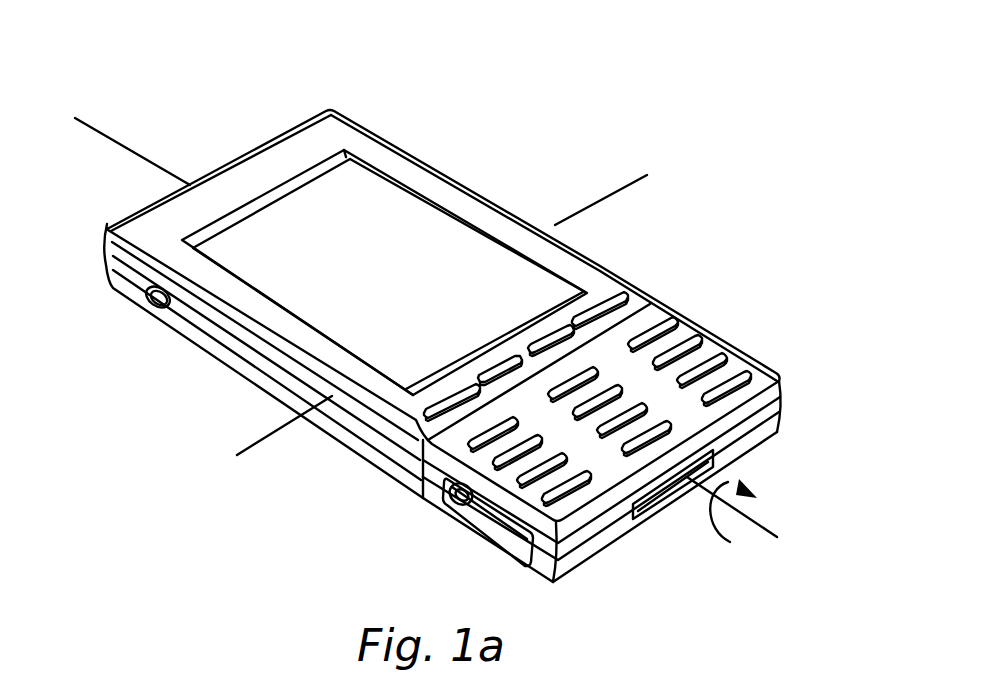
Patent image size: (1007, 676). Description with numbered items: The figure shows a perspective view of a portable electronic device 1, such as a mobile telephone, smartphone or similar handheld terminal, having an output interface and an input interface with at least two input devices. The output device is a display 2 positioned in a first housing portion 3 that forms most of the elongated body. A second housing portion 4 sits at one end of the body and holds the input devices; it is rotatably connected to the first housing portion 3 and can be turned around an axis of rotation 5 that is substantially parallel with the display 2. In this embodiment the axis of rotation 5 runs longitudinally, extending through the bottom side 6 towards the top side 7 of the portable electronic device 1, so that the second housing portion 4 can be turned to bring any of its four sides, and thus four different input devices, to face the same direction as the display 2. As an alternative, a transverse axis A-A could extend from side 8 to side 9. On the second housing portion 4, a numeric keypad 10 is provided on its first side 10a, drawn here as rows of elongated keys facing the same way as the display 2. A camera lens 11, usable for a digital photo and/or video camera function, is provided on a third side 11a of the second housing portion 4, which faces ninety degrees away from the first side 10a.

The portable electronic device 1 is at (440, 116).
The display 2 is at (340, 177).
The first housing portion 3 is at (160, 217).
The second housing portion 4 is at (703, 343).
The axis of rotation 5 is at (777, 537).
The bottom side 6 is at (617, 527).
The top side 7 is at (261, 143).
The side 8 is at (480, 198).
The side 9 is at (217, 350).
The numeric keypad 10 is at (664, 323).
The first side 10a is at (757, 372).
The camera lens 11 is at (450, 500).
The third side 11a is at (503, 537).